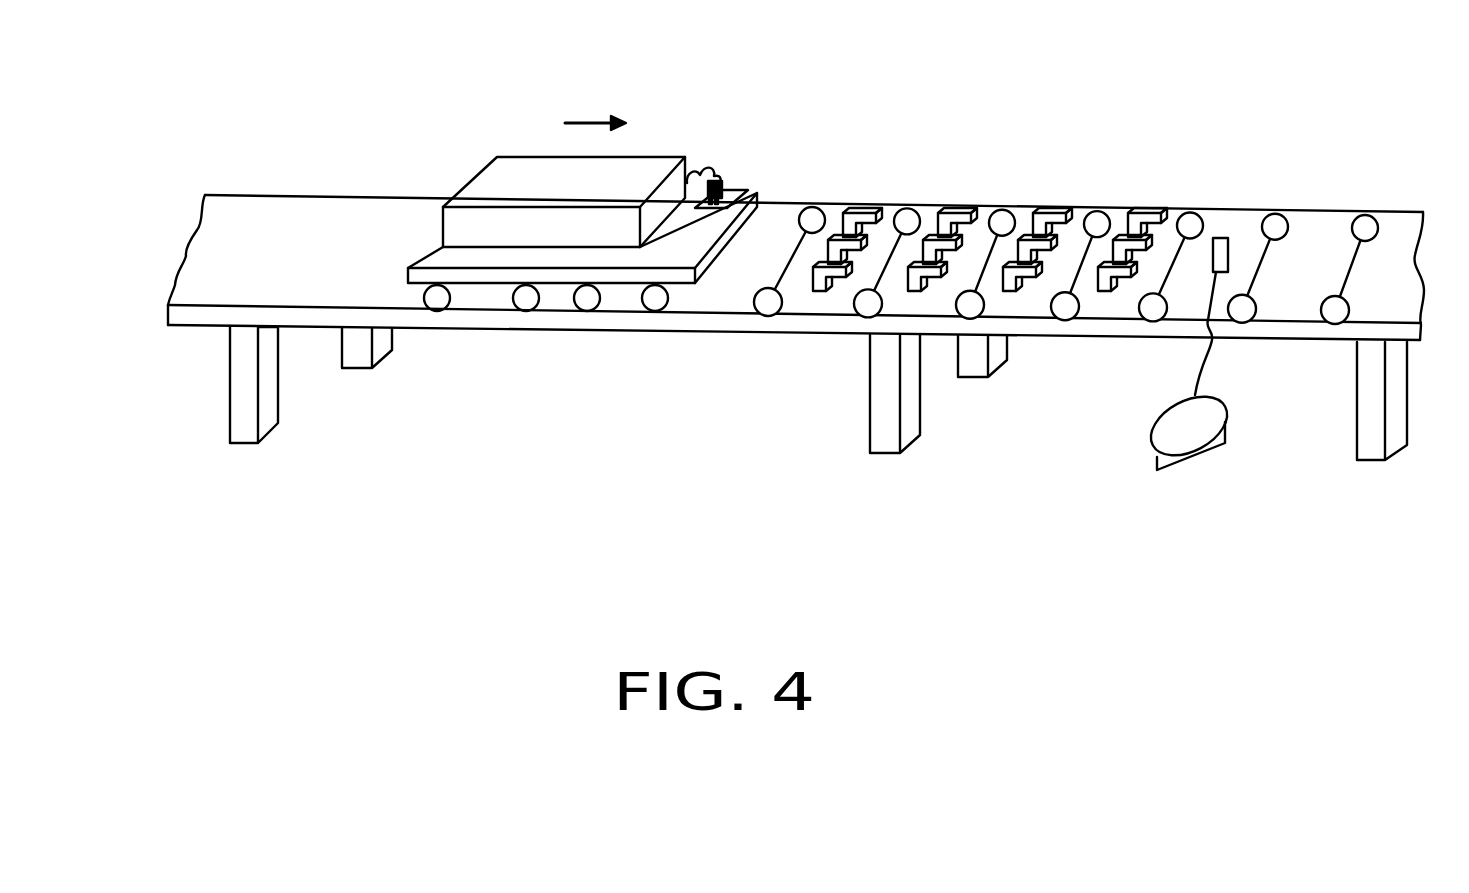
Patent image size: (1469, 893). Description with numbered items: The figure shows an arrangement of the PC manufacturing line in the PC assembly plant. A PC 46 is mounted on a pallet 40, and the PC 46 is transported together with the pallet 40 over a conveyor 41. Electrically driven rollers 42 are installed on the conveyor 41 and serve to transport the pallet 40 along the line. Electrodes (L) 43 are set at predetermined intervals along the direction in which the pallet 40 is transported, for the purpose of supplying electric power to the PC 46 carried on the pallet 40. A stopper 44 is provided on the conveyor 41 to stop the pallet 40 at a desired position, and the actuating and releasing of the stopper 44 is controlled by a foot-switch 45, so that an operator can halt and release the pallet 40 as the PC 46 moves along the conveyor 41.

The pallet 40 is at (618, 265).
The conveyor 41 is at (355, 168).
The electrically driven rollers 42 is at (810, 207).
The electrodes (L) 43 is at (958, 207).
The stopper 44 is at (1222, 238).
The foot-switch 45 is at (1203, 453).
The PC 46 is at (510, 157).